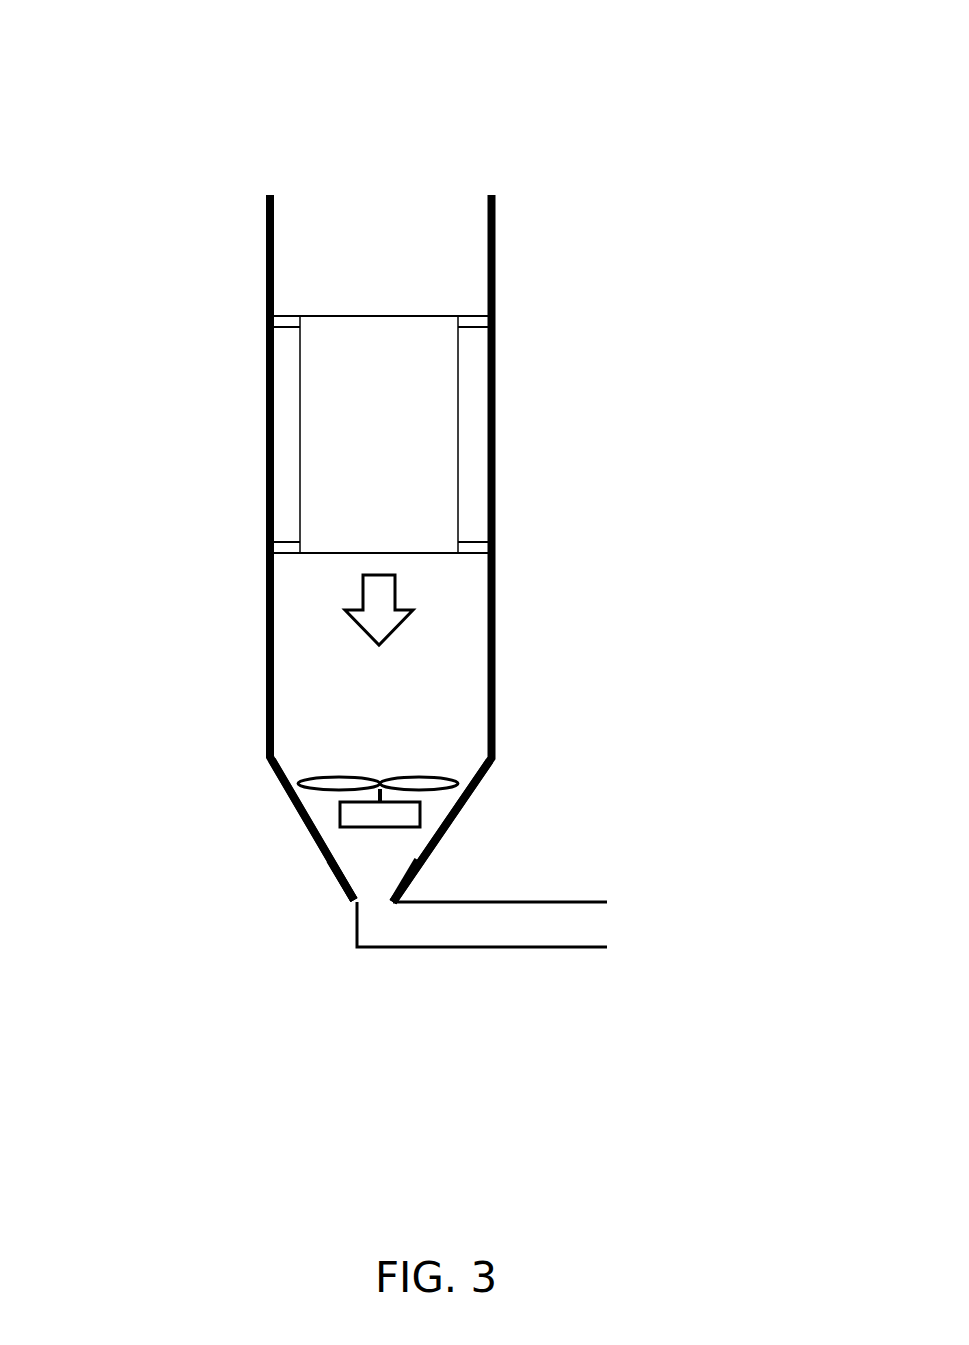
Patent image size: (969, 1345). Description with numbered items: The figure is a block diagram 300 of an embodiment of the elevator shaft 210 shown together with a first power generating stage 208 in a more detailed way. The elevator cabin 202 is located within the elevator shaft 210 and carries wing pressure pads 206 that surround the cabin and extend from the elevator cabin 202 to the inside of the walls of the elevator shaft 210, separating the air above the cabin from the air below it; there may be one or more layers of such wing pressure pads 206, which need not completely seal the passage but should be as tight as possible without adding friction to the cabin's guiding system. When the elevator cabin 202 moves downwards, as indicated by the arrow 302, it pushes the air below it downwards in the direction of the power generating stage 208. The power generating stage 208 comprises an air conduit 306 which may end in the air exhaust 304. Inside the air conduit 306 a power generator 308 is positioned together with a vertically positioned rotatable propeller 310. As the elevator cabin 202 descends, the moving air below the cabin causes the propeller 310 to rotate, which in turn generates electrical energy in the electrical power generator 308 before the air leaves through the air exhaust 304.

The block diagram 300 is at (134, 87).
The elevator cabin 202 is at (397, 395).
The wing pressure pads 206 is at (287, 305).
The first power generating stage 208 is at (281, 810).
The elevator shaft 210 is at (405, 267).
The arrow 302 is at (381, 631).
The air exhaust 304 is at (612, 941).
The air conduit 306 is at (326, 865).
The power generator 308 is at (424, 813).
The propeller 310 is at (449, 778).